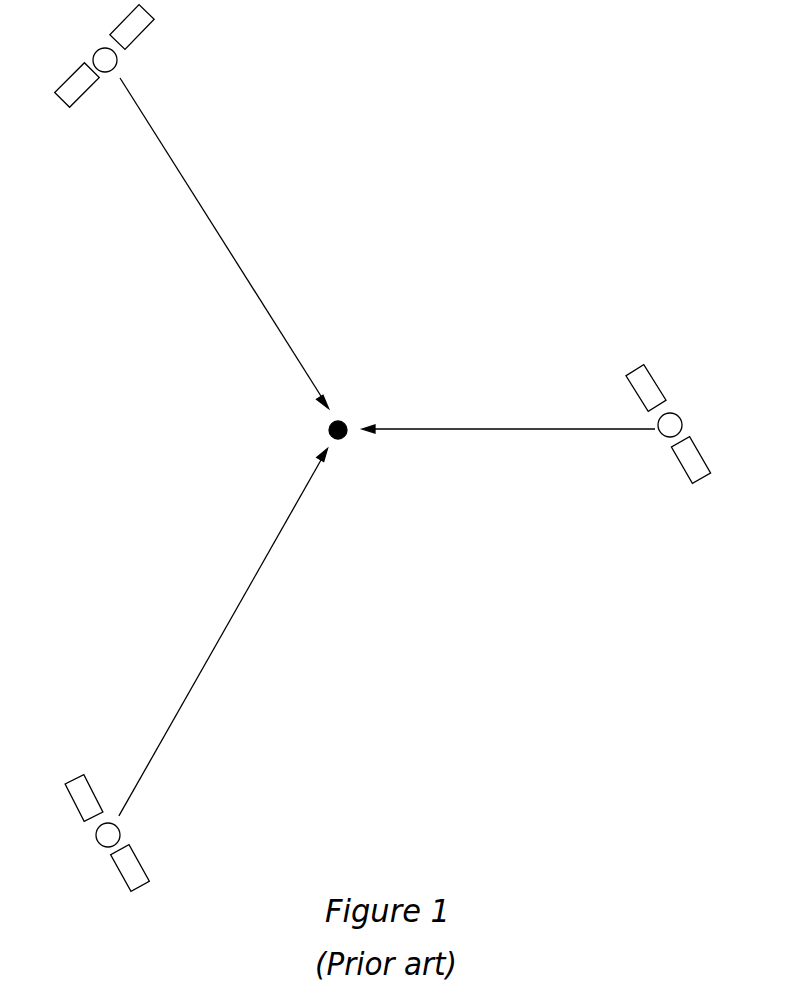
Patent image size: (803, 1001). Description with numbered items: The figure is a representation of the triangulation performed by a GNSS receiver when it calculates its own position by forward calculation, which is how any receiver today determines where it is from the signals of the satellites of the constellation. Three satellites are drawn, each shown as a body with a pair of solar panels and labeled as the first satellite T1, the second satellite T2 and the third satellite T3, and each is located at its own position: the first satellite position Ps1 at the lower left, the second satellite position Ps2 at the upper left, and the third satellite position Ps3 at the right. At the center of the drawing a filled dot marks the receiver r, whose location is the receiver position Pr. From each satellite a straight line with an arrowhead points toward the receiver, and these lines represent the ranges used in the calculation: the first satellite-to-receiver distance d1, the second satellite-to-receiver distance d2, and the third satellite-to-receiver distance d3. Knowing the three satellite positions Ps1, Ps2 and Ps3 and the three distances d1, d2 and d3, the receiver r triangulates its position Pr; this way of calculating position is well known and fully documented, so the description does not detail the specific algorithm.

The position of Satellite 1 Ps1 is at (92, 849).
The position of Satellite 2 Ps2 is at (94, 38).
The position of Satellite 3 Ps3 is at (689, 413).
The first satellite T1 is at (112, 833).
The second satellite T2 is at (108, 56).
The third satellite T3 is at (673, 424).
The distance from Satellite 1 to the Receiver d1 is at (223, 632).
The distance from Satellite 2 to the Receiver d2 is at (224, 243).
The distance from Satellite 3 to the Receiver d3 is at (508, 413).
The position of the Receiver Pr is at (327, 416).
The receiver r is at (348, 414).